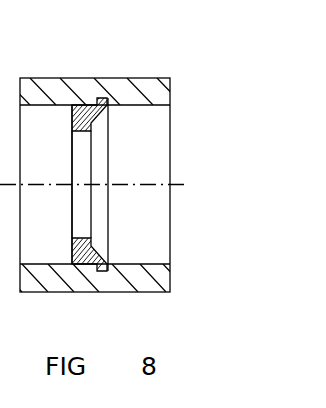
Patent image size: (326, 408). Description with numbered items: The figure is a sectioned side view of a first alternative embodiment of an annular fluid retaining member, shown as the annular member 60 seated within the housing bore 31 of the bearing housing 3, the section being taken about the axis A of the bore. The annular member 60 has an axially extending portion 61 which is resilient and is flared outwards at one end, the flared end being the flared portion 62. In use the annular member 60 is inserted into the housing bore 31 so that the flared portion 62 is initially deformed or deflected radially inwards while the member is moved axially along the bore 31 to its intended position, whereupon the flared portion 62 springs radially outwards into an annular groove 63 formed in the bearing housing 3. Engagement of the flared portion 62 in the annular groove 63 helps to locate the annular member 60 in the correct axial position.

The bearing housing 3 is at (152, 90).
The housing bore 31 is at (160, 118).
The annular member 60 is at (141, 129).
The axially extending portion 61 is at (72, 107).
The flared portion 62 is at (103, 98).
The annular groove 63 is at (107, 272).
The axis A is at (172, 185).